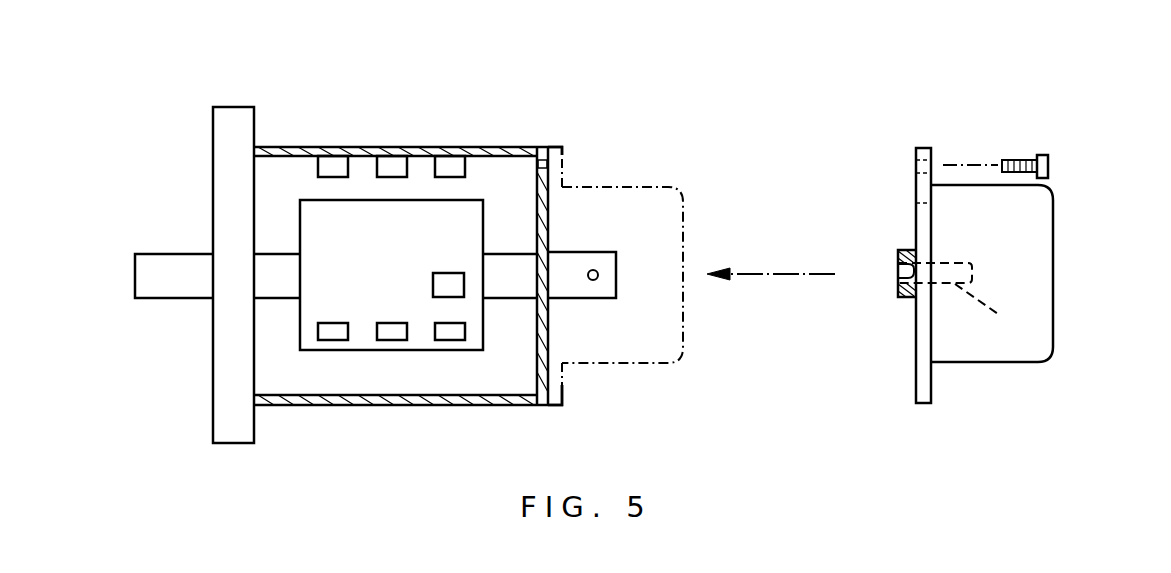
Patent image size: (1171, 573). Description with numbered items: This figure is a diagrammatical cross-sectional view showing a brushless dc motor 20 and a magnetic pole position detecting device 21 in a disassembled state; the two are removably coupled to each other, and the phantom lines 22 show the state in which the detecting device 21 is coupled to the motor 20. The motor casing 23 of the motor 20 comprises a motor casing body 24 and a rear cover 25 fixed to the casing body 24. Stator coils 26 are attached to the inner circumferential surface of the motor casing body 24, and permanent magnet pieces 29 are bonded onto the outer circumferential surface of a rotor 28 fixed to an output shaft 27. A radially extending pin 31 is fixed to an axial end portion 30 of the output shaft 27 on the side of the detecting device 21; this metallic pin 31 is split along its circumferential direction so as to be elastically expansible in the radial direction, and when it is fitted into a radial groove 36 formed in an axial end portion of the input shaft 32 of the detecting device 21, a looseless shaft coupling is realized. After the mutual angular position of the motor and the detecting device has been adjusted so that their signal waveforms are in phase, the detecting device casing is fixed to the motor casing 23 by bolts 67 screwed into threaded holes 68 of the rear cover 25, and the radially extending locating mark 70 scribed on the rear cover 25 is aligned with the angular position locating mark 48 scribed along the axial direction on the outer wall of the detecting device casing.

The brushless dc motor 20 is at (230, 112).
The magnetic pole position detecting device 21 is at (1052, 278).
The phantom lines 22 is at (684, 318).
The motor casing 23 is at (497, 229).
The motor casing body 24 is at (454, 133).
The rear cover 25 is at (543, 160).
The stator coils 26 is at (399, 159).
The output shaft 27 is at (181, 268).
The rotor 28 is at (323, 217).
The permanent magnet pieces 29 is at (393, 340).
The axial end portion 30 is at (574, 286).
The radially extending pin 31 is at (598, 275).
The input shaft 32 is at (915, 300).
The radial groove 36 is at (898, 276).
The angular position locating mark 48 is at (916, 224).
The bolts 67 is at (1049, 162).
The threaded holes 68 is at (538, 164).
The radially extending locating mark 70 is at (548, 222).